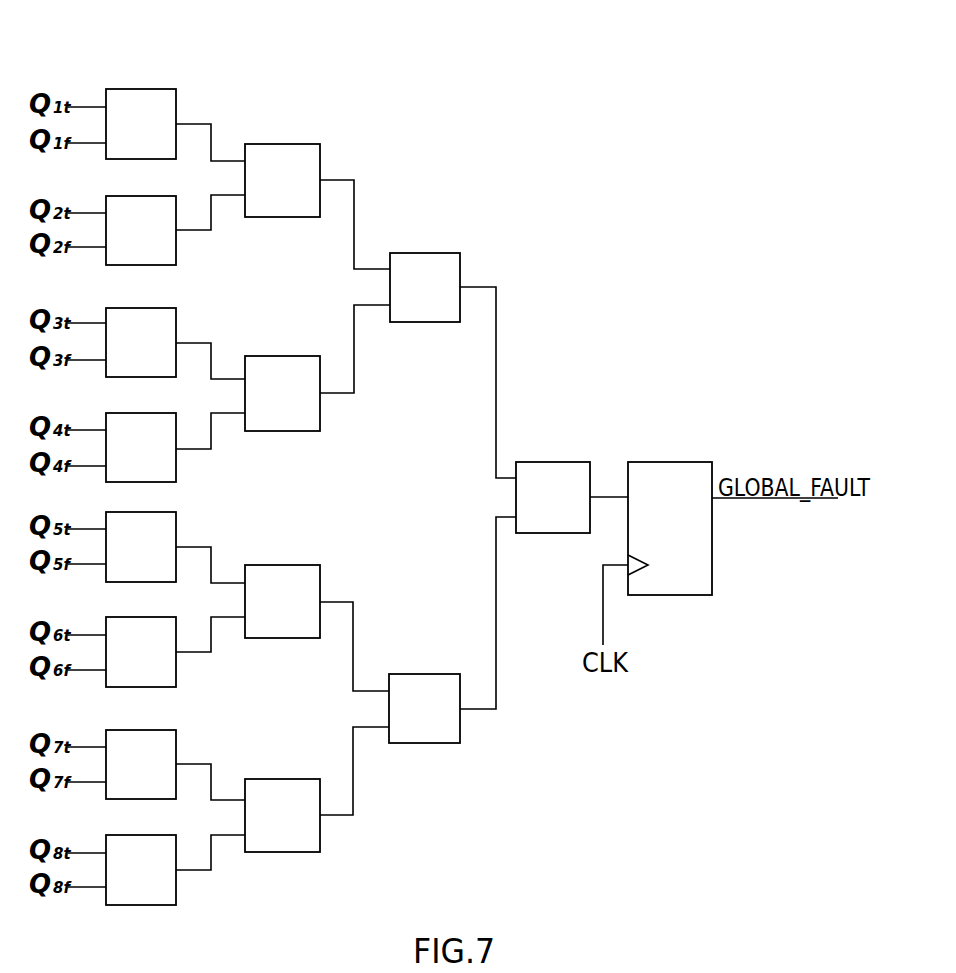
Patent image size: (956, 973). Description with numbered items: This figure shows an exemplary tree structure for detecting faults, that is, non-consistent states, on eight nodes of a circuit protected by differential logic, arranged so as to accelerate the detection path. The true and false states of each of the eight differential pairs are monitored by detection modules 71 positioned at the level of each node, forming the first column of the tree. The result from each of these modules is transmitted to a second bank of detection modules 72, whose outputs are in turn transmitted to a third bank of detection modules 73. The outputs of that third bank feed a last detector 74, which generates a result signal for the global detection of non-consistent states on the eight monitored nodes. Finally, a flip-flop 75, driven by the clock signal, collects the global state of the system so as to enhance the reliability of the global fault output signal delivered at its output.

The detection modules 71 is at (104, 73).
The second bank of detection modules 72 is at (245, 121).
The third bank of detection modules 73 is at (387, 235).
The last detector 74 is at (517, 436).
The flip-flop 75 is at (669, 472).